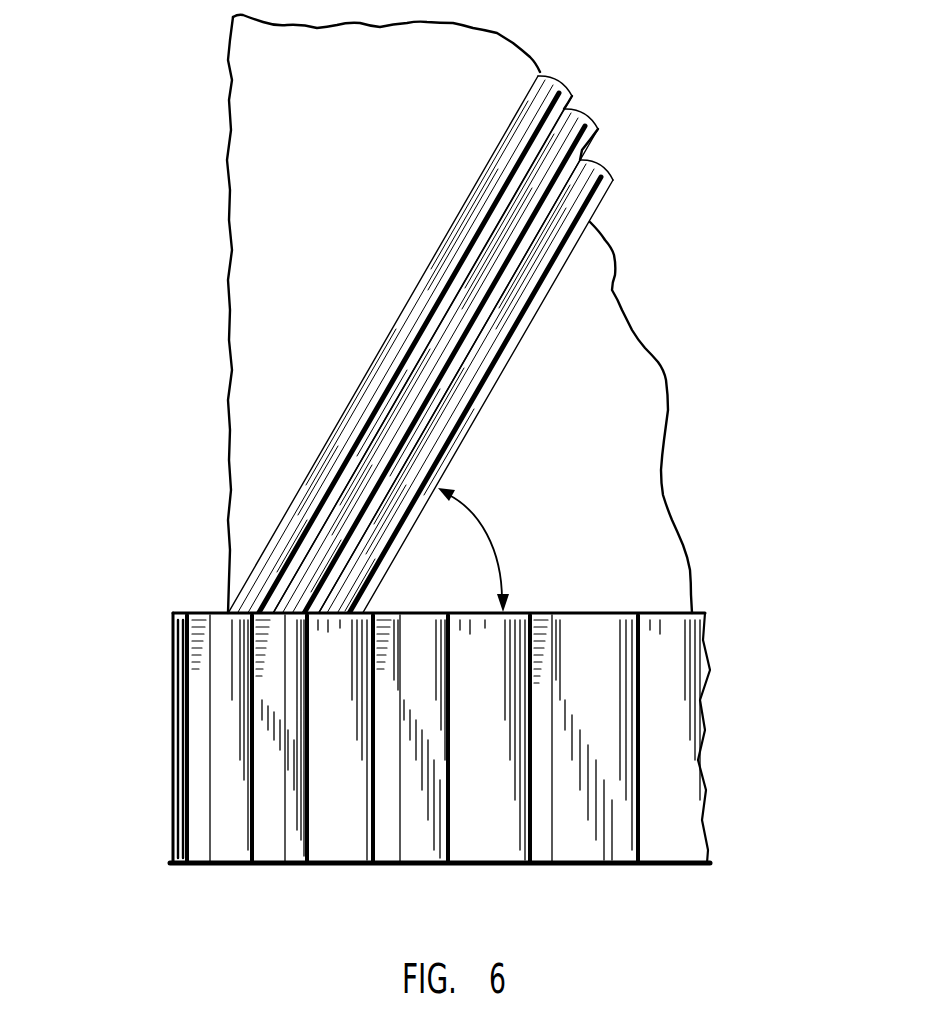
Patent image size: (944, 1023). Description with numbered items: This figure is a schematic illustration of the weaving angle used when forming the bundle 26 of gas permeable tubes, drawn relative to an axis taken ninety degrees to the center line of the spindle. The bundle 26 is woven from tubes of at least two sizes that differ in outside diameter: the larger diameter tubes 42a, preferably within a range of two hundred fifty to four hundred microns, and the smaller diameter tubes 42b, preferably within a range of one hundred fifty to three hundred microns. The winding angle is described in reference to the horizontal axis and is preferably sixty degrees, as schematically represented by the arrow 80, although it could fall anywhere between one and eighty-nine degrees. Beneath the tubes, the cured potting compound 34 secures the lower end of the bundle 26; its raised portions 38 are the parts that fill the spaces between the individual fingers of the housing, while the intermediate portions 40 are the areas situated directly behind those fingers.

The bundle 26 is at (192, 348).
The larger diameter tubes 42a is at (560, 77).
The smaller diameter tubes 42b is at (593, 120).
The arrow 80 is at (493, 550).
The potting compound 34 is at (145, 725).
The raised portions 38 is at (347, 717).
The intermediate portions 40 is at (434, 707).